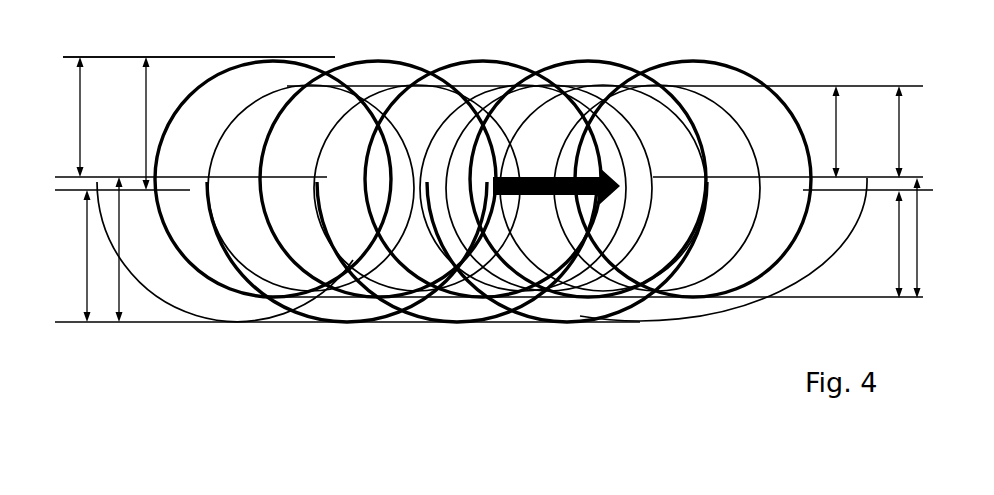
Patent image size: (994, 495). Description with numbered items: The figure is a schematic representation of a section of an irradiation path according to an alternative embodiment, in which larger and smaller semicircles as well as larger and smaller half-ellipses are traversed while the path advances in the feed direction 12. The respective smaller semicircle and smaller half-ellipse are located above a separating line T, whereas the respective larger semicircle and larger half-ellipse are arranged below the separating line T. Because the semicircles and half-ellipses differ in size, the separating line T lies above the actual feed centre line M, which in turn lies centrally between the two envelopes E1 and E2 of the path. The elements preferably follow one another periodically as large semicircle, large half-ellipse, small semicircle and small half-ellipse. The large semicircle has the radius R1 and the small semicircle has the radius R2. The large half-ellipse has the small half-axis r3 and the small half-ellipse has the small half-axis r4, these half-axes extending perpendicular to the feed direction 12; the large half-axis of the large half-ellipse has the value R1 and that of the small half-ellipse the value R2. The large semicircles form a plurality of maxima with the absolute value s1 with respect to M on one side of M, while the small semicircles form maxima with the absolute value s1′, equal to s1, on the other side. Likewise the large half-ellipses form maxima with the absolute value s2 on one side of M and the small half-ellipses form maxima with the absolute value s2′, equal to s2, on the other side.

The feed direction 12 is at (557, 198).
The radius of the small semicircle R2 is at (82, 131).
The envelope E1 is at (124, 62).
The absolute value of the maxima formed by the small semicircles s1′ is at (150, 92).
The feed centre line M is at (80, 193).
The separating line T is at (58, 180).
The absolute value of the maxima formed by the large semicircles s1 is at (83, 277).
The envelope E2 is at (113, 324).
The radius of the large semicircle R1 is at (113, 308).
The absolute value of the maxima formed by the small half-ellipses s2′ is at (830, 113).
The small half-axis of the small half-ellipse r4 is at (893, 118).
The absolute value of the maxima formed by the large half-ellipses s2 is at (893, 252).
The small half-axis of the large half-ellipse r3 is at (913, 257).